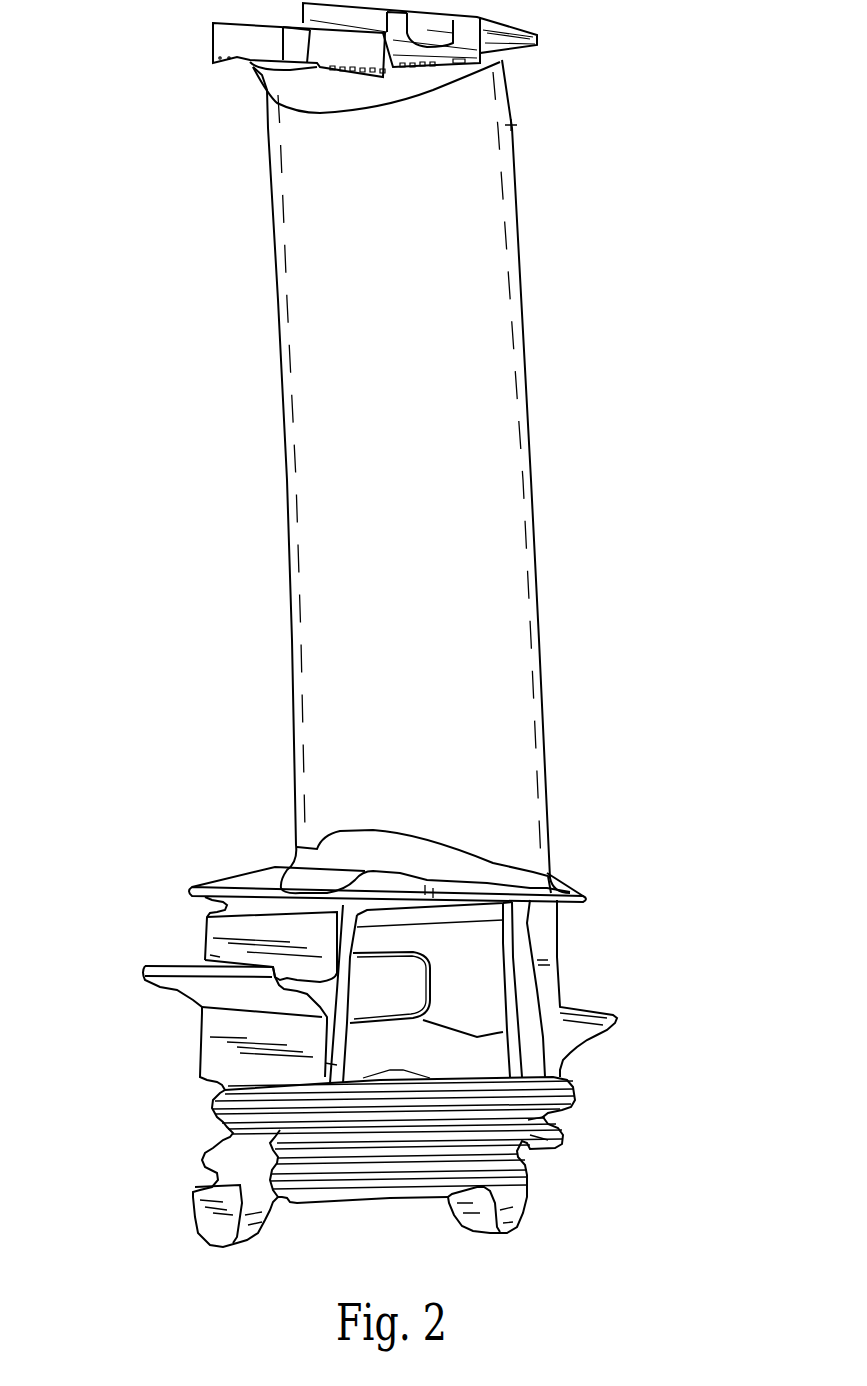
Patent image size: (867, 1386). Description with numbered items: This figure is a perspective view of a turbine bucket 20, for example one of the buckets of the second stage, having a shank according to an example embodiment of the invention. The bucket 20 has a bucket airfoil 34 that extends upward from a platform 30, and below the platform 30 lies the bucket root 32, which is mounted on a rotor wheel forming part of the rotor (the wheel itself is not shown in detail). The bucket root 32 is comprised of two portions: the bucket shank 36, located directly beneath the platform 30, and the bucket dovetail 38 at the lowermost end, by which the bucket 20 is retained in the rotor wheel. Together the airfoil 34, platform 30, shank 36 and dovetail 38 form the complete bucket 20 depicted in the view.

The bucket 20 is at (388, 625).
The platform 30 is at (260, 870).
The bucket root 32 is at (148, 1048).
The bucket airfoil 34 is at (534, 480).
The bucket shank 36 is at (620, 960).
The bucket dovetail 38 is at (590, 1172).